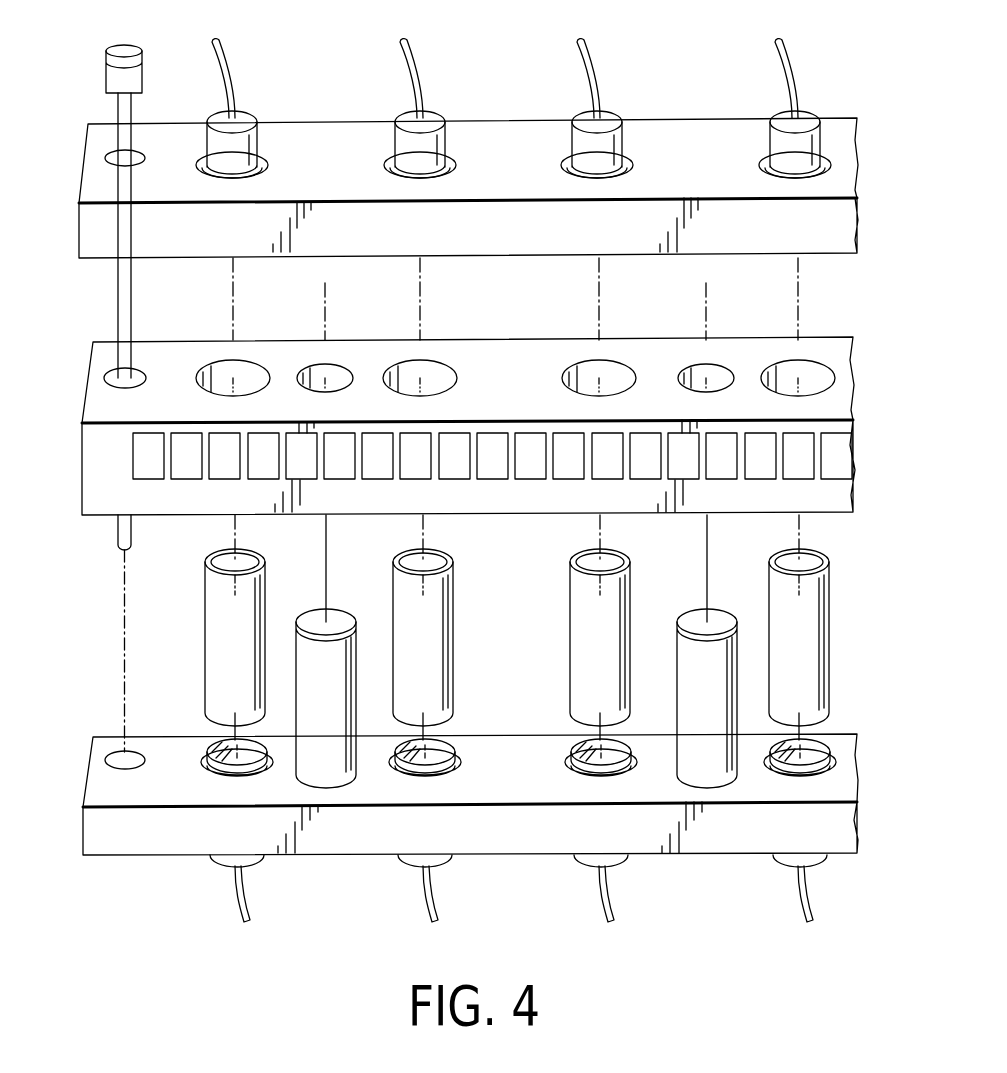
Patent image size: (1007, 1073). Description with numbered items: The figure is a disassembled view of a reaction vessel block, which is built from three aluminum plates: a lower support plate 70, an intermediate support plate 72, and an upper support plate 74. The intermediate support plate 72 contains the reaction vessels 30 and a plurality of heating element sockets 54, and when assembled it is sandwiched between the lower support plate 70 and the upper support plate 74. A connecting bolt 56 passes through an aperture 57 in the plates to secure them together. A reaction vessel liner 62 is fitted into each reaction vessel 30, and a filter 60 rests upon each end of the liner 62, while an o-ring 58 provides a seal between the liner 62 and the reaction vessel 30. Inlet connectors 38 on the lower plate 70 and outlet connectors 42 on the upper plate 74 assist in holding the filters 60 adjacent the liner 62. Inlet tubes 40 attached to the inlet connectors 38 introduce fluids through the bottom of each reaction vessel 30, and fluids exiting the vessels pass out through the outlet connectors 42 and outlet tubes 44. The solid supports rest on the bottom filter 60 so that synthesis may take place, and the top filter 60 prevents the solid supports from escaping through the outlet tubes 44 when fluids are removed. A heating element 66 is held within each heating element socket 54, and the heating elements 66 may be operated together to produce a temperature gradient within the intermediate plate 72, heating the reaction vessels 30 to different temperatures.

The reaction vessel 30 is at (250, 372).
The inlet connector 38 is at (222, 864).
The inlet tube 40 is at (250, 912).
The outlet connector 42 is at (252, 146).
The outlet tube 44 is at (230, 74).
The heating element socket 54 is at (343, 372).
The connecting bolt 56 is at (118, 278).
The aperture 57 is at (107, 380).
The o-ring 58 is at (215, 780).
The filter 60 is at (243, 758).
The reaction vessel liner 62 is at (257, 607).
The heating element 66 is at (334, 618).
The lower support plate 70 is at (92, 822).
The intermediate support plate 72 is at (88, 477).
The upper support plate 74 is at (90, 223).